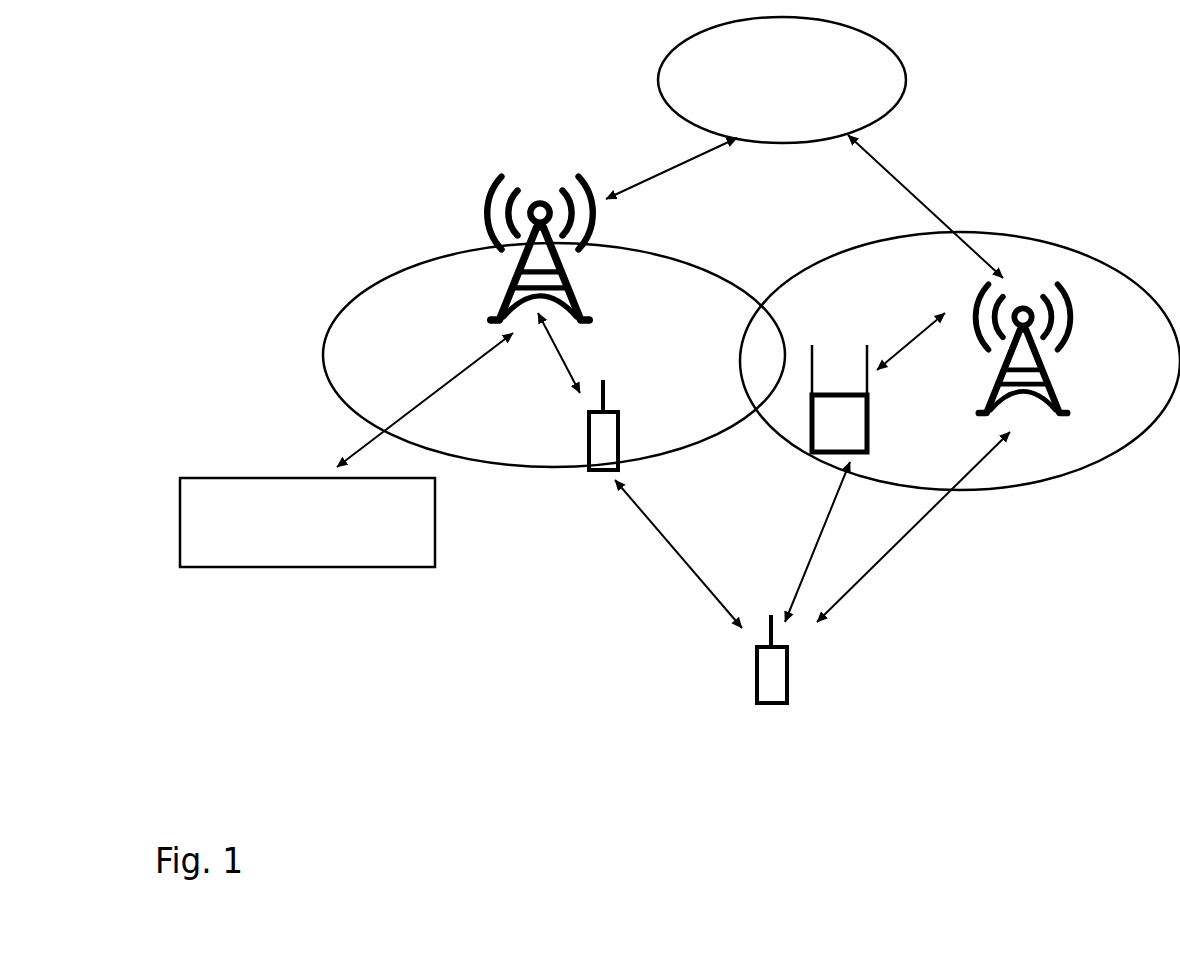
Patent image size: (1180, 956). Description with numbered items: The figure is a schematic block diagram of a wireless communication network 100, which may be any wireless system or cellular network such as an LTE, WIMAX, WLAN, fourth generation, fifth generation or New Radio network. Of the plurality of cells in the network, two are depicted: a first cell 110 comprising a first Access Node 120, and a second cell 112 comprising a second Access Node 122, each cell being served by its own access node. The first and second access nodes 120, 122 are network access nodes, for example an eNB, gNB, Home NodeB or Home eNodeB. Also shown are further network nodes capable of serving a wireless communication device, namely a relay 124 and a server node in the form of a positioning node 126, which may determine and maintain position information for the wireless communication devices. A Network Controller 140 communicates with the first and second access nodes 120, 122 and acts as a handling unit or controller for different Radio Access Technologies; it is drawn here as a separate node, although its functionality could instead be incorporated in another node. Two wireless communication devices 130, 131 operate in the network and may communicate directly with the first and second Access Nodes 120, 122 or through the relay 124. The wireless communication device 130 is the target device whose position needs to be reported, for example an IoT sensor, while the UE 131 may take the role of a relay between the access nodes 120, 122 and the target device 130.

The wireless communication network 100 is at (680, 410).
The first cell 110 is at (1045, 460).
The second cell 112 is at (388, 297).
The first Access Node 120 is at (1037, 387).
The second Access Node 122 is at (513, 305).
The relay 124 is at (858, 437).
The positioning node 126 is at (307, 522).
The wireless communication device 130 is at (770, 670).
The wireless communication device 131 is at (607, 423).
The Network Controller 140 is at (782, 80).